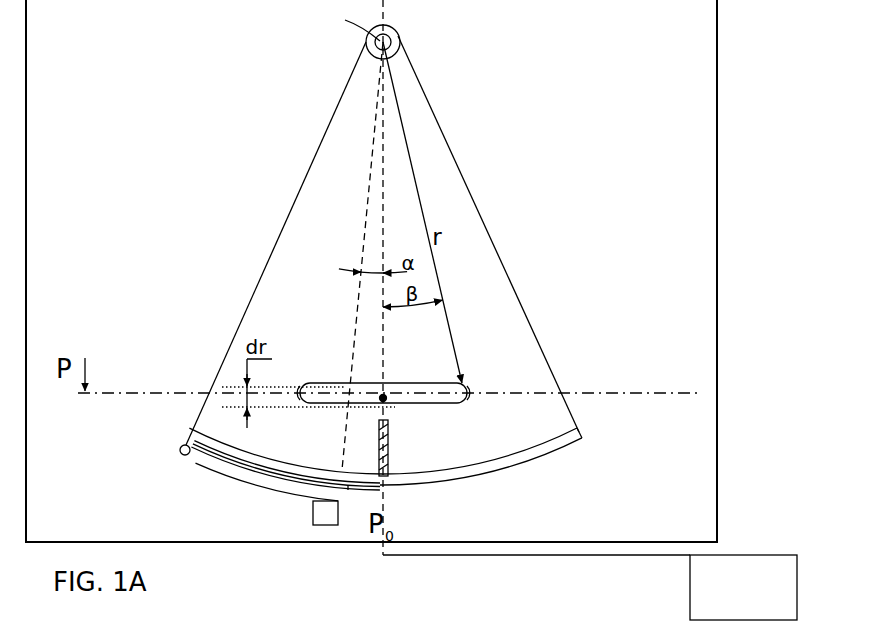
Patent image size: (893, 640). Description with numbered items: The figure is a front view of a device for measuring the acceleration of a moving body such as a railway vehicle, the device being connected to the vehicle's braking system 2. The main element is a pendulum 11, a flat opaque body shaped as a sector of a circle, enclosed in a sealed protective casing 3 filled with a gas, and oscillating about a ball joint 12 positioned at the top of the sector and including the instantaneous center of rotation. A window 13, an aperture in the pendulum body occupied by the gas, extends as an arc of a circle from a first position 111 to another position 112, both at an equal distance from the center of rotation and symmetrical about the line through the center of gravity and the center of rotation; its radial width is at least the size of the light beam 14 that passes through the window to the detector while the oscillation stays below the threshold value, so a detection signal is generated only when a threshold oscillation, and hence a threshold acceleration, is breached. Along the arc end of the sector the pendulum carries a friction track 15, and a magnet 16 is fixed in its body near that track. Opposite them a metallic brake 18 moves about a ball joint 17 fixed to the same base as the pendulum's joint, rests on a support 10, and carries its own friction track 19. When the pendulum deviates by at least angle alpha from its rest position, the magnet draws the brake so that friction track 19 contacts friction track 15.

The braking system 2 is at (743, 587).
The sealed protective casing 3 is at (721, 248).
The support 10 is at (312, 513).
The pendulum 11 is at (481, 213).
The ball joint 12 is at (401, 34).
The window 13 is at (435, 405).
The light beam 14 is at (391, 400).
The friction track 15 is at (583, 440).
The magnet 16 is at (378, 447).
The ball joint 17 is at (180, 451).
The brake 18 is at (197, 469).
The friction track 19 is at (350, 488).
The first position 111 is at (469, 391).
The other position 112 is at (304, 384).